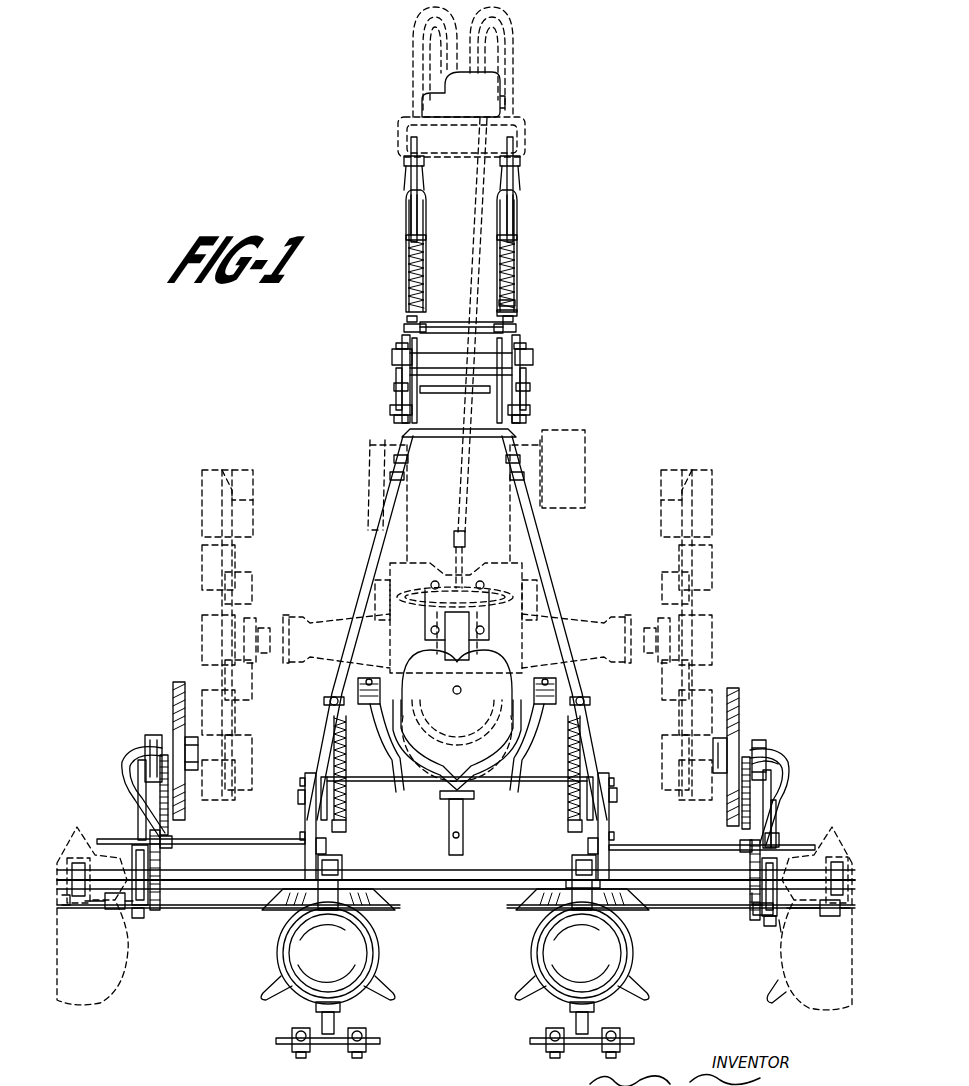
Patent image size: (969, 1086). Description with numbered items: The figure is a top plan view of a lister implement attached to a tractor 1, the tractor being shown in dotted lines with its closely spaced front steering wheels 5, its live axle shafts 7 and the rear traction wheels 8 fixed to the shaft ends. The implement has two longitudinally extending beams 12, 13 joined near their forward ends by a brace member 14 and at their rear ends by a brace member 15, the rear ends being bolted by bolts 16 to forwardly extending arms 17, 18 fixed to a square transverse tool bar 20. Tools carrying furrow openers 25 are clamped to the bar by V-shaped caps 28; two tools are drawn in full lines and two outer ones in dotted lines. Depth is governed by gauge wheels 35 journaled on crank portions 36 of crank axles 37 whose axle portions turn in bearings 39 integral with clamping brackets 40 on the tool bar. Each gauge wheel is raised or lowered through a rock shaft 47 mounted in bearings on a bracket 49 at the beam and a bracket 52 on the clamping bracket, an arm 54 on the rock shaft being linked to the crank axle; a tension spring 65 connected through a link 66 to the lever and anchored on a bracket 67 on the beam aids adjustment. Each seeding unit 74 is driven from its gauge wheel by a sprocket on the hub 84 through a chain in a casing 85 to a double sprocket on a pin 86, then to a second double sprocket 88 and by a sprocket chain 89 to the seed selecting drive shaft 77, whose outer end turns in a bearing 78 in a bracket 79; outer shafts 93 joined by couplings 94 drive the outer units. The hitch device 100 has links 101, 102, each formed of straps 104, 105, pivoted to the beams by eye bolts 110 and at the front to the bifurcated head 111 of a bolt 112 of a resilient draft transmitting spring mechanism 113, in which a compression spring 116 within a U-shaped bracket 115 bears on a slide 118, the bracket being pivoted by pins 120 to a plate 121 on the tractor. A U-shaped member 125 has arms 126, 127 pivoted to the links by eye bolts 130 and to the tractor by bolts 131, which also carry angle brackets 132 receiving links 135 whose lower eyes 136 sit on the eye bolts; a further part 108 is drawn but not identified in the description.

The tractor 1 is at (589, 463).
The front steering wheels 5 is at (470, 21).
The live axle shafts 7 is at (262, 636).
The traction wheels 8 is at (212, 509).
The longitudinally extending beam 12 is at (352, 643).
The longitudinally extending beam 13 is at (542, 595).
The brace member 14 is at (452, 438).
The brace member 15 is at (352, 790).
The bolts 16 is at (307, 784).
The forwardly extending arm 17 is at (300, 800).
The forwardly extending arm 18 is at (614, 800).
The transverse tool bar 20 is at (450, 886).
The furrow opener 25 is at (340, 872).
The V-shaped cap 28 is at (560, 870).
The gauge wheels 35 is at (173, 697).
The crank portions 36 is at (130, 758).
The crank axles 37 is at (140, 796).
The bearings 39 is at (130, 863).
The clamping brackets 40 is at (175, 866).
The rock shaft 47 is at (215, 848).
The bracket 49 is at (310, 840).
The bracket 52 is at (779, 846).
The arm 54 is at (773, 820).
The tension spring 65 is at (346, 790).
The link 66 is at (336, 826).
The brackets 67 is at (323, 704).
The seeding unit 74 is at (122, 975).
The seed selecting drive shaft 77 is at (232, 910).
The bearing 78 is at (138, 908).
The bracket 79 is at (764, 918).
The hub 84 is at (164, 752).
The casing 85 is at (150, 737).
The pin 86 is at (781, 769).
The second double sprocket 88 is at (172, 838).
The sprocket chain 89 is at (752, 905).
The shafts 93 is at (82, 905).
The couplings 94 is at (781, 932).
The hitch device 100 is at (528, 375).
The link 101 is at (412, 380).
The link 102 is at (503, 388).
The strap 104 is at (414, 381).
The strap 105 is at (406, 386).
The cross bar 108 is at (458, 393).
The eye bolts 110 is at (392, 412).
The bifurcated head 111 is at (507, 312).
The bolt 112 is at (413, 228).
The resilient draft transmitting spring mechanism 113 is at (409, 284).
The U-shaped bracket 115 is at (508, 290).
The compression spring 116 is at (410, 265).
The slide 118 is at (410, 247).
The bolts or pins 120 is at (408, 163).
The plate 121 is at (412, 146).
The U-shaped member 125 is at (446, 338).
The arm 126 is at (408, 330).
The arm 127 is at (510, 326).
The eye bolts 130 is at (402, 352).
The bolts 131 is at (420, 345).
The angle brackets 132 is at (402, 366).
The links 135 is at (392, 400).
The eye 136 is at (395, 421).